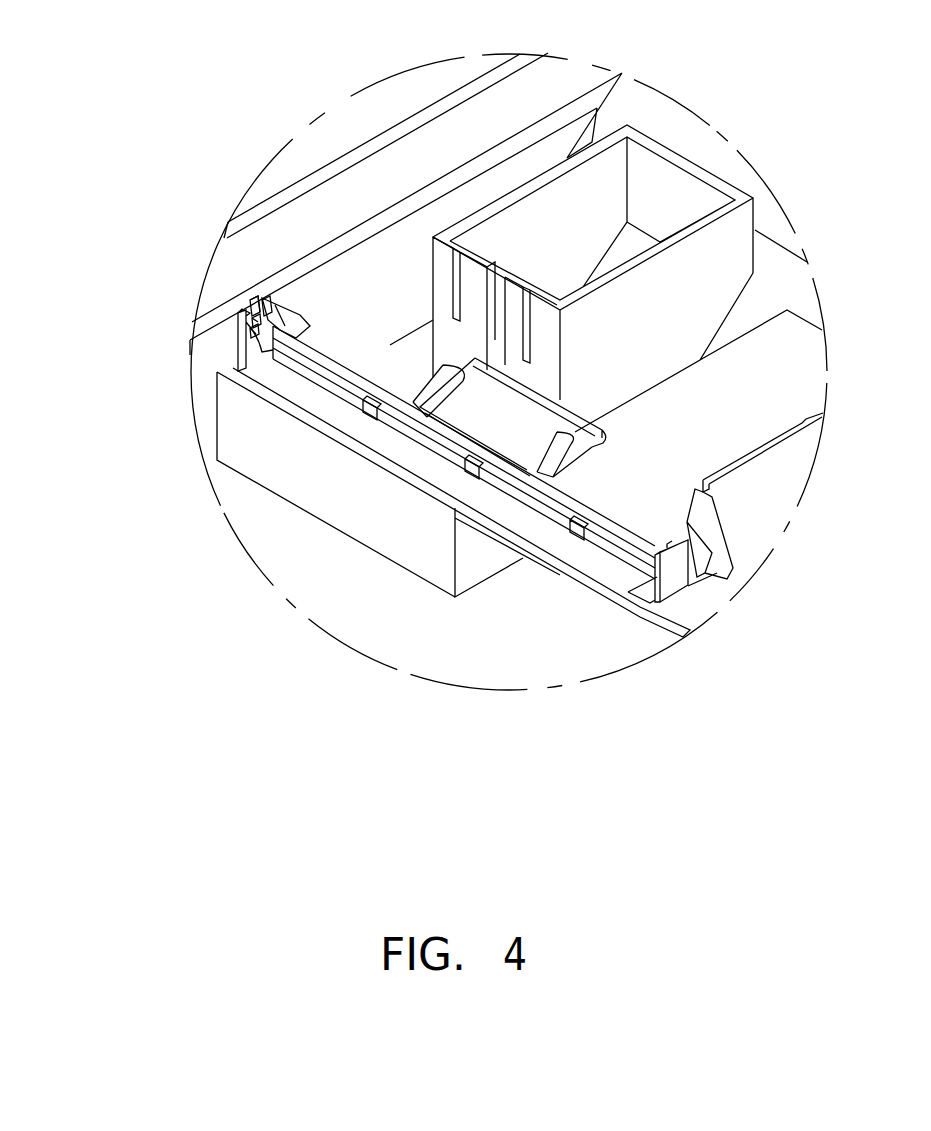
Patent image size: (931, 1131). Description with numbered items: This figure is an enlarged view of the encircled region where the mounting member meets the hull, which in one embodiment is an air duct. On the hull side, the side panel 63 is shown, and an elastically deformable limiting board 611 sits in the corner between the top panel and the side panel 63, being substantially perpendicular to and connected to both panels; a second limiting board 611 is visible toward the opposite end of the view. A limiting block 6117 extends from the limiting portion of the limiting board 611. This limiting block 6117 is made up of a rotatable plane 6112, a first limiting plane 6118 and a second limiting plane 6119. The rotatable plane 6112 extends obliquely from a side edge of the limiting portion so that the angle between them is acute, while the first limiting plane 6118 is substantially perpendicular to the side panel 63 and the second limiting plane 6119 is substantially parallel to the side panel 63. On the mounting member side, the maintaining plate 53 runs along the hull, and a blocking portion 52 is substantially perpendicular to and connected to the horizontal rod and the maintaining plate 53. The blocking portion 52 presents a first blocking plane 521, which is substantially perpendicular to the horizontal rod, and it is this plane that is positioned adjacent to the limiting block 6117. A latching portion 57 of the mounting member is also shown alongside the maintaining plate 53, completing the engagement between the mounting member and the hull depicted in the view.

The blocking portion 52 is at (297, 305).
The first blocking plane 521 is at (266, 298).
The limiting block 6117 is at (112, 215).
The rotatable plane 6112 is at (258, 298).
The first limiting plane 6118 is at (262, 302).
The second limiting plane 6119 is at (263, 300).
The limiting board 611 is at (238, 341).
The latching portion 57 is at (300, 403).
The side panel 63 is at (263, 466).
The maintaining plate 53 is at (478, 413).